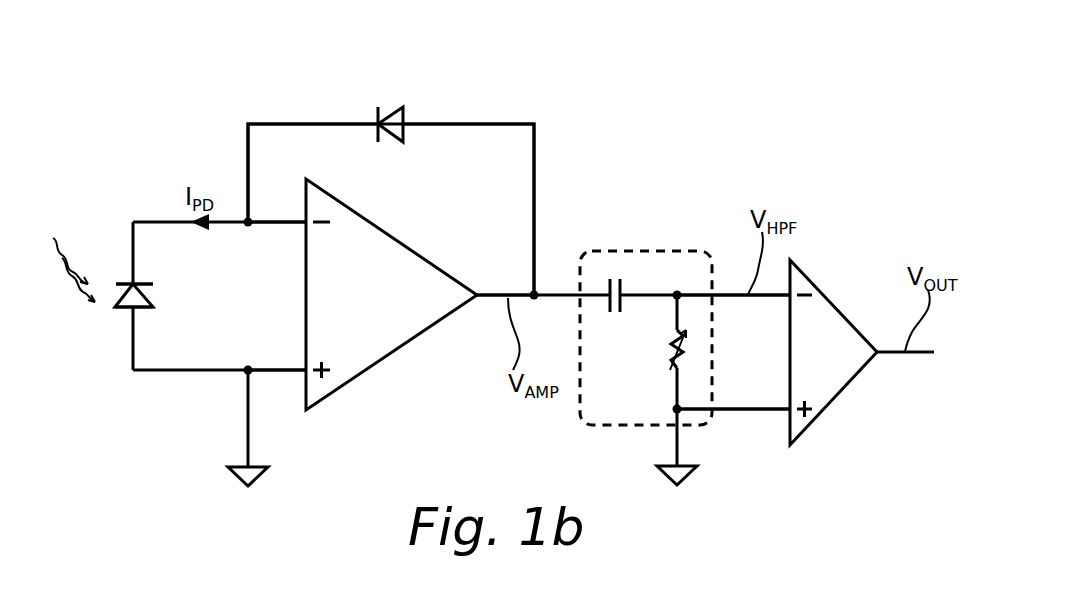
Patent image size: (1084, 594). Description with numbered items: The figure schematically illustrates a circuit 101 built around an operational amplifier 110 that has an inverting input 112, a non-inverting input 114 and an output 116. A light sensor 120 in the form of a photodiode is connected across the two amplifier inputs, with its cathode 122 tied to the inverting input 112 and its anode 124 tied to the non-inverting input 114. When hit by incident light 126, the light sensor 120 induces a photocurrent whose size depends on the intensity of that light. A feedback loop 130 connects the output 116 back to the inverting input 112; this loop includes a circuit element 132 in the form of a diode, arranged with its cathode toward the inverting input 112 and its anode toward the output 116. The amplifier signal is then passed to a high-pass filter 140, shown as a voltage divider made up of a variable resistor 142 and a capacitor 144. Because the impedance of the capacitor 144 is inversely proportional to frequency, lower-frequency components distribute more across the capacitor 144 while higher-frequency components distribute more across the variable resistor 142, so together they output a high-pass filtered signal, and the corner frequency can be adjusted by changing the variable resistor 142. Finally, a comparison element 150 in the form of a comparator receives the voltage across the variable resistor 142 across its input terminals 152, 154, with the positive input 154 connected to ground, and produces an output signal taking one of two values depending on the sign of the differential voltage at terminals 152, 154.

The circuit 101 is at (140, 92).
The operational amplifier 110 is at (392, 352).
The inverting input 112 is at (305, 223).
The non-inverting input 114 is at (305, 369).
The output 116 is at (504, 295).
The light sensor 120 is at (120, 307).
The cathode 122 is at (150, 283).
The anode 124 is at (147, 308).
The incident light 126 is at (118, 281).
The feedback loop 130 is at (535, 208).
The circuit element 132 is at (403, 115).
The high-pass filter 140 is at (594, 425).
The variable resistor 142 is at (673, 362).
The capacitor 144 is at (625, 282).
The comparison element 150 is at (829, 410).
The input terminal 152 is at (788, 296).
The positive input 154 is at (788, 410).